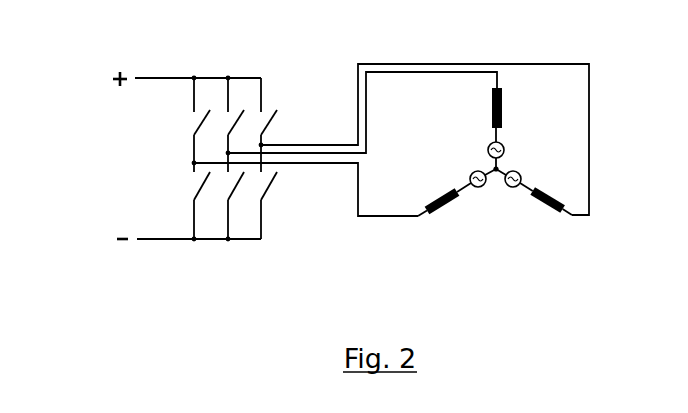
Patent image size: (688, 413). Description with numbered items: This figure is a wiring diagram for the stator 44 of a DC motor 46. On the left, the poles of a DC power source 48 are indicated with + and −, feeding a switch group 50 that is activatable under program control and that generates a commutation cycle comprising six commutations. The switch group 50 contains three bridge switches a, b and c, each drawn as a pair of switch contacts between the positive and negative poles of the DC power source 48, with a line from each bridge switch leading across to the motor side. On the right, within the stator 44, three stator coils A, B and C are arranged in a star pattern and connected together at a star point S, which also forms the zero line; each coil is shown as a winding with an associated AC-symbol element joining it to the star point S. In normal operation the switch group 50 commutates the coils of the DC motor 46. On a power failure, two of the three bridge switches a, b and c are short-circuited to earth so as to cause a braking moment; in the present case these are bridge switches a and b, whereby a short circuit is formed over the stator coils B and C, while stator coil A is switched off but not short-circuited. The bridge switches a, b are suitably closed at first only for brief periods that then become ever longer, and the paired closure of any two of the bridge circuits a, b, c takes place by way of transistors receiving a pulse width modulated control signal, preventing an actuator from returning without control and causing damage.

The stator 44 is at (570, 155).
The DC motor 46 is at (495, 196).
The DC power source 48 is at (91, 162).
The switch group 50 is at (275, 194).
The star point S is at (513, 157).
The stator coil A is at (457, 198).
The stator coil B is at (485, 128).
The stator coil C is at (534, 192).
The bridge switch a is at (291, 159).
The bridge switch b is at (303, 158).
The bridge switch c is at (271, 159).